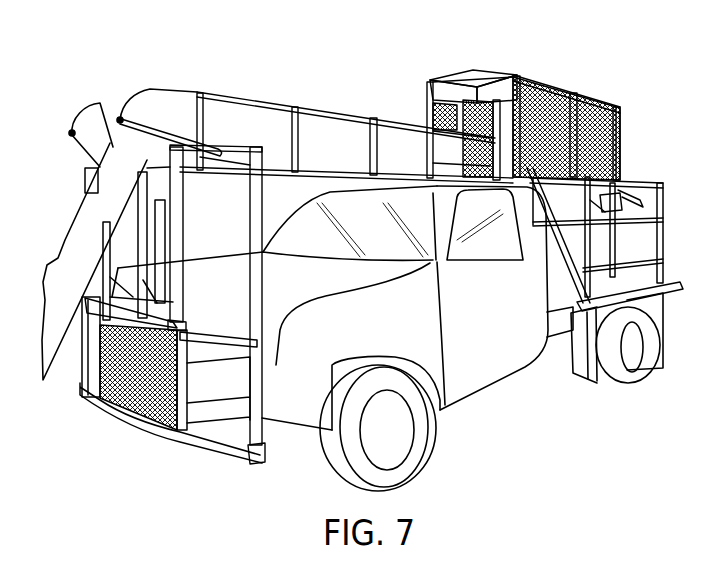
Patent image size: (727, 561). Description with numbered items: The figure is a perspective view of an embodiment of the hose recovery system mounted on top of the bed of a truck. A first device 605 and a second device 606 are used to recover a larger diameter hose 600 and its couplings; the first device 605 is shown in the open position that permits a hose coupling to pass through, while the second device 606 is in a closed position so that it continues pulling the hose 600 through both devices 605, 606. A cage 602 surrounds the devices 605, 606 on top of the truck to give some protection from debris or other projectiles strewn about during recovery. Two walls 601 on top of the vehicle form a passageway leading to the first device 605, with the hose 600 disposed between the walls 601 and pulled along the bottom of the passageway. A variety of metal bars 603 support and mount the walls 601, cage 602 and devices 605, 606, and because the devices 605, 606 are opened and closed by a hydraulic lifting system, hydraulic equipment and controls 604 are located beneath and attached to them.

The hose 600 is at (65, 233).
The walls 601 is at (297, 108).
The cage 602 is at (565, 88).
The metal bars 603 is at (142, 432).
The hydraulic equipment and controls 604 is at (583, 237).
The first device 605 is at (495, 72).
The second device 606 is at (612, 126).